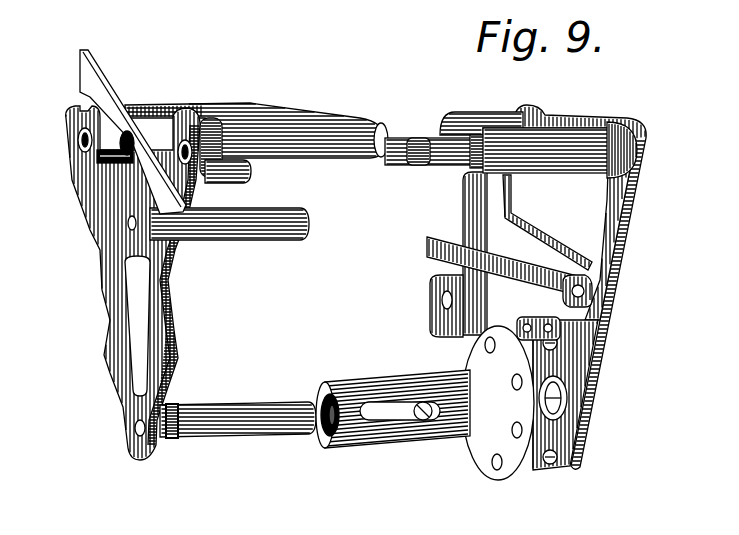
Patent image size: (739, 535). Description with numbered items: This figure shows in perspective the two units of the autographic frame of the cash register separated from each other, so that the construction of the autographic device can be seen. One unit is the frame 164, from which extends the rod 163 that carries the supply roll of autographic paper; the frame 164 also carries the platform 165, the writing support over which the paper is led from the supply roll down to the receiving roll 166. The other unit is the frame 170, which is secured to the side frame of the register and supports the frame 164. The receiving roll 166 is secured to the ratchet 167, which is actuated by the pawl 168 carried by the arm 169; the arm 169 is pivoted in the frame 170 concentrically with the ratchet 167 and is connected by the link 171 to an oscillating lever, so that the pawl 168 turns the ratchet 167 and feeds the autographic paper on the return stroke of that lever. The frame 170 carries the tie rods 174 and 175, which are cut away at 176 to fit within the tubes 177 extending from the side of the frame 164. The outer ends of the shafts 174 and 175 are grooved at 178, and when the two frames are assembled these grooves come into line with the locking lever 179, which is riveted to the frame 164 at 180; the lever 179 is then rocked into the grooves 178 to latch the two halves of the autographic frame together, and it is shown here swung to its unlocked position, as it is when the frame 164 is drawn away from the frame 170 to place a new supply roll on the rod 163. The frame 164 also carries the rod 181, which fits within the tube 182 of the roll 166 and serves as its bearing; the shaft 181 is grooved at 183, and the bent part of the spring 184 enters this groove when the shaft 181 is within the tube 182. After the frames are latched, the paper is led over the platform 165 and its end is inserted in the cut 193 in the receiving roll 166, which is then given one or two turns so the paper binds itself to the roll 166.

The rod 163 is at (232, 243).
The frame 164 is at (103, 263).
The platform 165 is at (260, 113).
The receiving roll 166 is at (427, 380).
The ratchet 167 is at (595, 452).
The pawl 168 is at (531, 333).
The arm 169 is at (582, 310).
The frame 170 is at (636, 227).
The link 171 is at (463, 237).
The tie rod 174 is at (567, 147).
The tie rod 175 is at (443, 128).
The cut-away portion 176 is at (437, 168).
The tube 177 is at (117, 163).
The groove 178 is at (413, 140).
The locking lever 179 is at (106, 82).
The rivet 180 is at (131, 124).
The rod 181 is at (229, 438).
The tube 182 is at (330, 388).
The groove 183 is at (173, 417).
The spring 184 is at (403, 418).
The cut 193 is at (470, 420).